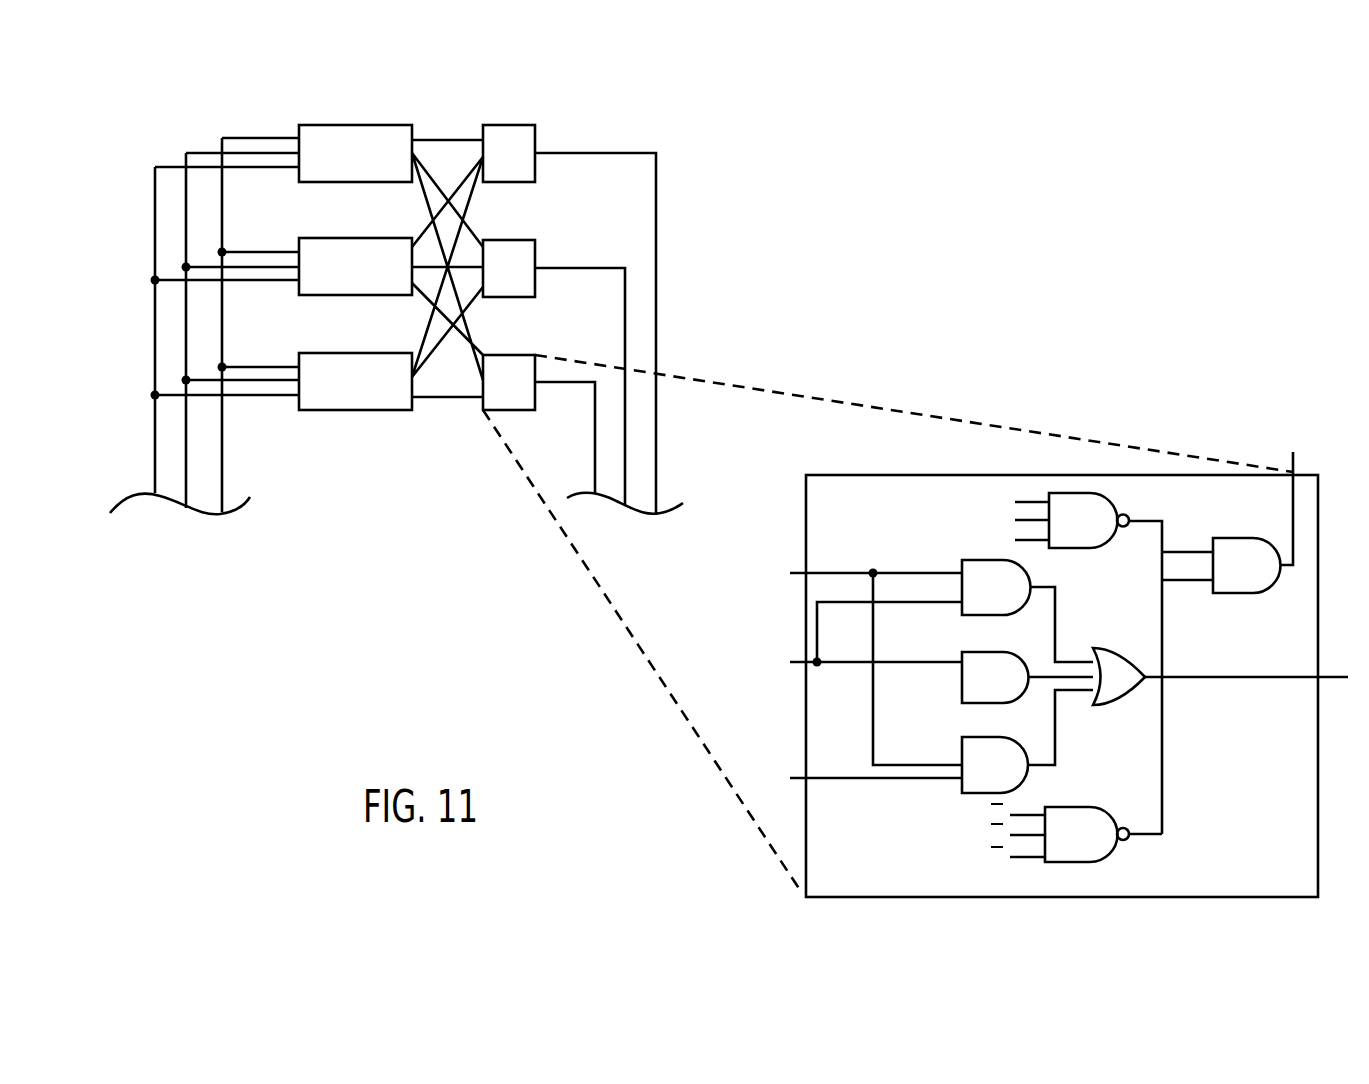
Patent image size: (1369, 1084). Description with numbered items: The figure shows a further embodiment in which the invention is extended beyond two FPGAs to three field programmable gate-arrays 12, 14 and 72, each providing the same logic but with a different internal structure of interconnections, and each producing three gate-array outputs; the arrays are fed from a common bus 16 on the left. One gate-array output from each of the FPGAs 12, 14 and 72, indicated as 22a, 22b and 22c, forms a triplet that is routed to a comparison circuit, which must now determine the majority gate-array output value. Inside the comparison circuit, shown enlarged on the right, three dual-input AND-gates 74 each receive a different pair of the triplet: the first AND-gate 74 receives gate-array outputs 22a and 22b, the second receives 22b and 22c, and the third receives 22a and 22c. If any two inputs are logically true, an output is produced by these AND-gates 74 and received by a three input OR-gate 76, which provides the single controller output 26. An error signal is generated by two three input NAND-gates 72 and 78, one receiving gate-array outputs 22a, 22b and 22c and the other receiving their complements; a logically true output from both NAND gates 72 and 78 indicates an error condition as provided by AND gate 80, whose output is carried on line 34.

The field programmable gate-array 12 is at (358, 125).
The field programmable gate-array 14 is at (358, 238).
The bus 16 is at (253, 137).
The gate-array output 22a is at (451, 140).
The gate-array output 22b is at (458, 360).
The gate-array output 22c is at (426, 410).
The controller output 26 is at (1340, 683).
The select line 34 is at (1293, 472).
The field programmable gate-array / three input NAND-gate 72 is at (368, 353).
The dual-input AND-gate 74 is at (966, 650).
The three input OR-gate 76 is at (1121, 651).
The three input NAND-gate 78 is at (1077, 806).
The AND gate 80 is at (1230, 595).